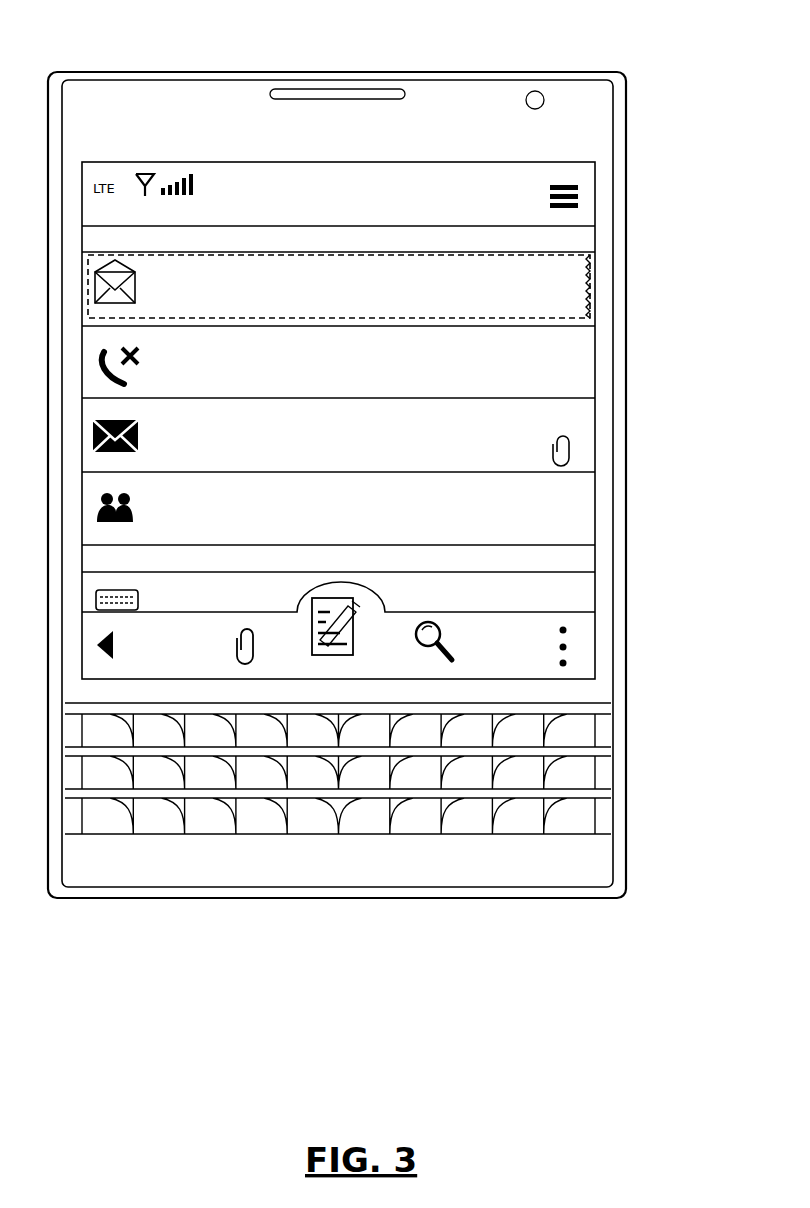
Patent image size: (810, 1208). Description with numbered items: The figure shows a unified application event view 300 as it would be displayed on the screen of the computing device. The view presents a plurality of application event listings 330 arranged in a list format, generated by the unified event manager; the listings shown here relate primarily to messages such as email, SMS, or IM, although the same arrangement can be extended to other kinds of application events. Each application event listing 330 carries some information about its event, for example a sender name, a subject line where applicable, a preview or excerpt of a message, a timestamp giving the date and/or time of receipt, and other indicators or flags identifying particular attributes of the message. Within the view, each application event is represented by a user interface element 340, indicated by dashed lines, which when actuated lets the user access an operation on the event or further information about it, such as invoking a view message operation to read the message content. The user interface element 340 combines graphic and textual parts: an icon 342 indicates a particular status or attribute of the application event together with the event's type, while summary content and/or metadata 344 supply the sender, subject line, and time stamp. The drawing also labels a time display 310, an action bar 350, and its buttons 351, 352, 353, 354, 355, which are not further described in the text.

The unified application event view 300 is at (500, 163).
The time display 310 is at (373, 199).
The application event listings 330 is at (600, 248).
The user interface element 340 is at (517, 254).
The icon 342 is at (118, 272).
The summary content and/or metadata 344 is at (222, 268).
The action bar 350 is at (338, 622).
The back button 351 is at (104, 657).
The attachment button 352 is at (245, 665).
The compose button 353 is at (337, 645).
The search button 354 is at (435, 646).
The overflow menu button 355 is at (566, 668).